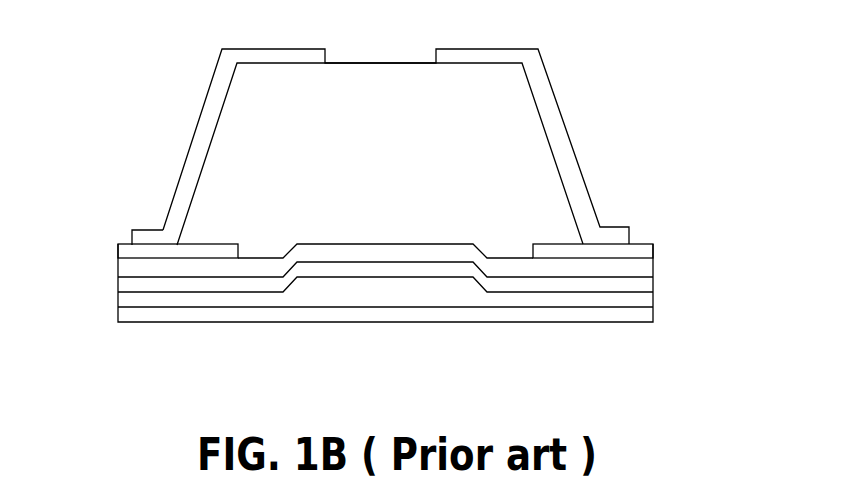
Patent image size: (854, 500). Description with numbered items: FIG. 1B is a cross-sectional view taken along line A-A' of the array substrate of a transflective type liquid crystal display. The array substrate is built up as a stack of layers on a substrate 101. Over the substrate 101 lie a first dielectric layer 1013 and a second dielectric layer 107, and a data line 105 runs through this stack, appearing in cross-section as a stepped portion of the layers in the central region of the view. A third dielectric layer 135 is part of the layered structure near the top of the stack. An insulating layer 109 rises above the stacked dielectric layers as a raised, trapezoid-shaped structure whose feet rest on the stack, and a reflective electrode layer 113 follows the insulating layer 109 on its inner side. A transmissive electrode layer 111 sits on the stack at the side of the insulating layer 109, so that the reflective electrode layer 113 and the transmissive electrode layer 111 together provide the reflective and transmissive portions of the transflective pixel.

The substrate 101 is at (127, 316).
The first dielectric layer 1013 is at (640, 298).
The data line 105 is at (387, 279).
The second dielectric layer 107 is at (320, 268).
The third dielectric layer 135 is at (130, 268).
The transmissive electrode layer 111 is at (632, 248).
The reflective electrode layer 113 is at (513, 58).
The insulating layer 109 is at (382, 75).